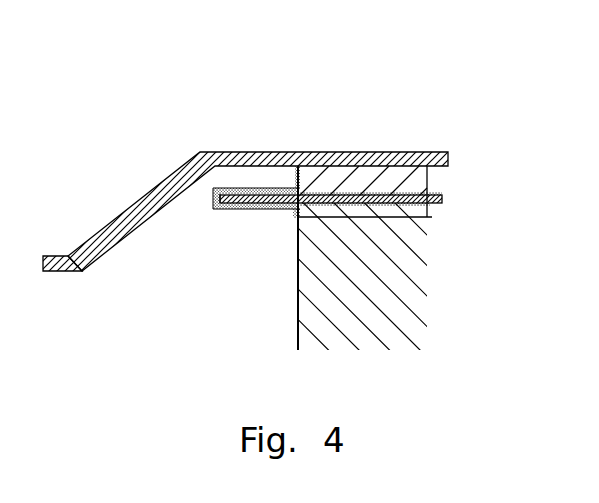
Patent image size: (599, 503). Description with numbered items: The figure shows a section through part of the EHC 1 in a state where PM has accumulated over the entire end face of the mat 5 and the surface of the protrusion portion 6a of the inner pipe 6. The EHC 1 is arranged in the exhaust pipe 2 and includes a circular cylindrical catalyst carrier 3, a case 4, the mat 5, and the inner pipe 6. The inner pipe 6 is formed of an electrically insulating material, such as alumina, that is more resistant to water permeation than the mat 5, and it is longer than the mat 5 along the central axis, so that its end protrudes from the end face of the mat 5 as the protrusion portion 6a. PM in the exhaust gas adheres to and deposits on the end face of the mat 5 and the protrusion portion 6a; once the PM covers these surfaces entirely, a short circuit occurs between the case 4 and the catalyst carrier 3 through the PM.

The EHC 1 is at (88, 82).
The exhaust pipe 2 is at (57, 255).
The catalyst carrier 3 is at (297, 278).
The case 4 is at (219, 152).
The mat 5 is at (393, 178).
The inner pipe 6 is at (443, 199).
The protrusion portion 6a is at (215, 210).
The element PM is at (258, 192).